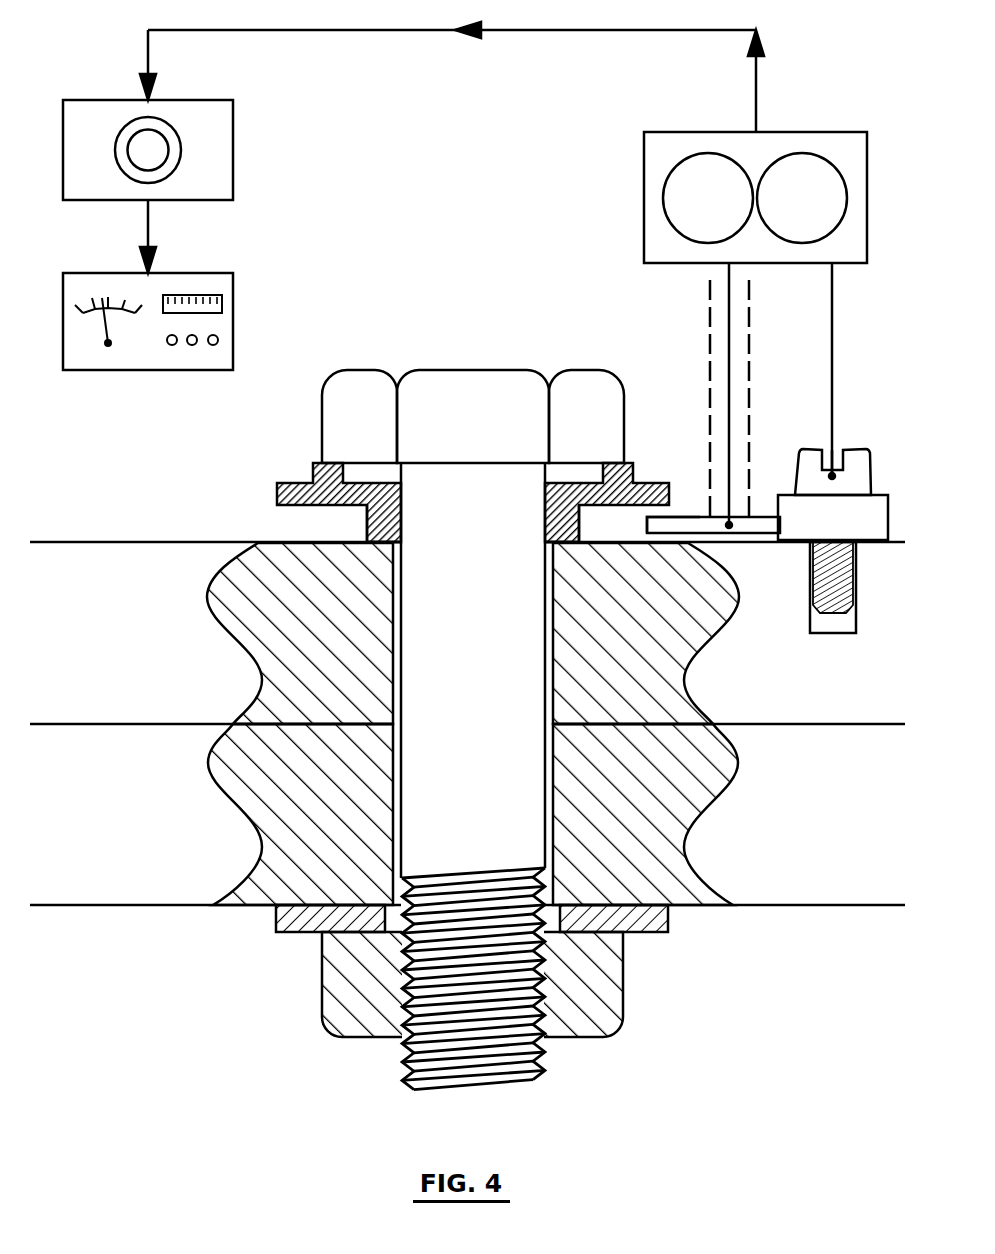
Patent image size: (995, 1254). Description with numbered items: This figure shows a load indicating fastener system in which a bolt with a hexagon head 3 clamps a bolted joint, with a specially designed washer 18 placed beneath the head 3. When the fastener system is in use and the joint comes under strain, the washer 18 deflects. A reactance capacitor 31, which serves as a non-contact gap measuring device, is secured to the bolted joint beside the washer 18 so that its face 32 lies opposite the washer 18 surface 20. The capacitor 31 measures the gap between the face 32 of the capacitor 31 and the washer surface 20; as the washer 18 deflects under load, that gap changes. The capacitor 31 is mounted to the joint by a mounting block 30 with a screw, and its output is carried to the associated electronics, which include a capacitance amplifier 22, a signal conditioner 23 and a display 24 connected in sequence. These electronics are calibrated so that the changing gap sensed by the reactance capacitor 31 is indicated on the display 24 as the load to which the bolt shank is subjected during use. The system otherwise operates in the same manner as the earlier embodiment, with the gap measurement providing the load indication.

The hexagon head 3 is at (360, 385).
The washer 18 is at (277, 483).
The washer surface 20 is at (288, 507).
The capacitance amplifier 22 is at (644, 160).
The signal conditioner 23 is at (235, 115).
The display 24 is at (235, 287).
The mounting block with screw 30 is at (888, 527).
The reactance capacitor 31 is at (708, 525).
The face of the capacitor 32 is at (695, 517).